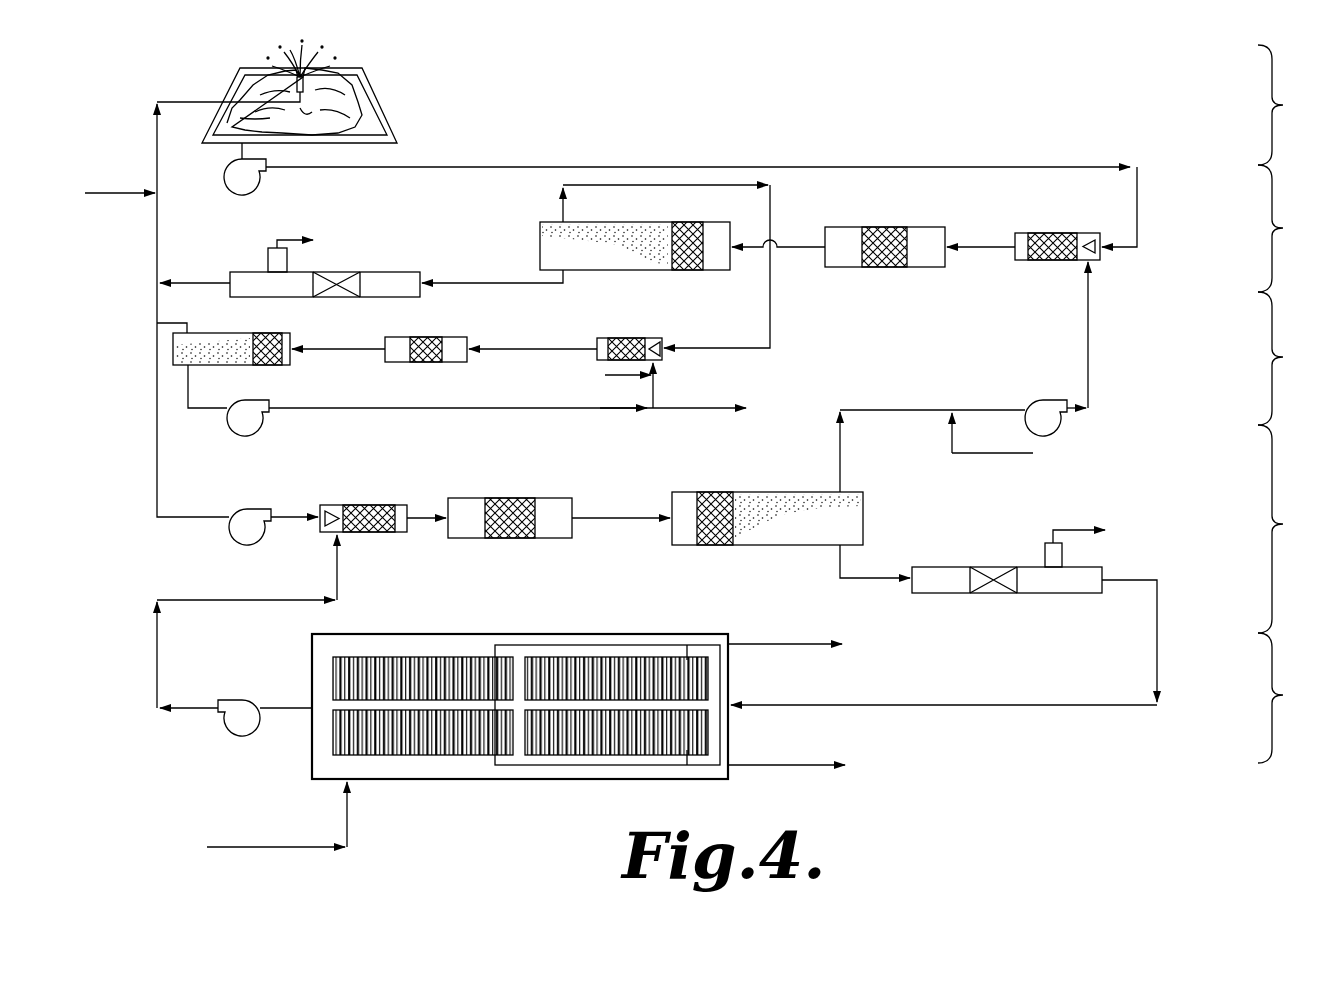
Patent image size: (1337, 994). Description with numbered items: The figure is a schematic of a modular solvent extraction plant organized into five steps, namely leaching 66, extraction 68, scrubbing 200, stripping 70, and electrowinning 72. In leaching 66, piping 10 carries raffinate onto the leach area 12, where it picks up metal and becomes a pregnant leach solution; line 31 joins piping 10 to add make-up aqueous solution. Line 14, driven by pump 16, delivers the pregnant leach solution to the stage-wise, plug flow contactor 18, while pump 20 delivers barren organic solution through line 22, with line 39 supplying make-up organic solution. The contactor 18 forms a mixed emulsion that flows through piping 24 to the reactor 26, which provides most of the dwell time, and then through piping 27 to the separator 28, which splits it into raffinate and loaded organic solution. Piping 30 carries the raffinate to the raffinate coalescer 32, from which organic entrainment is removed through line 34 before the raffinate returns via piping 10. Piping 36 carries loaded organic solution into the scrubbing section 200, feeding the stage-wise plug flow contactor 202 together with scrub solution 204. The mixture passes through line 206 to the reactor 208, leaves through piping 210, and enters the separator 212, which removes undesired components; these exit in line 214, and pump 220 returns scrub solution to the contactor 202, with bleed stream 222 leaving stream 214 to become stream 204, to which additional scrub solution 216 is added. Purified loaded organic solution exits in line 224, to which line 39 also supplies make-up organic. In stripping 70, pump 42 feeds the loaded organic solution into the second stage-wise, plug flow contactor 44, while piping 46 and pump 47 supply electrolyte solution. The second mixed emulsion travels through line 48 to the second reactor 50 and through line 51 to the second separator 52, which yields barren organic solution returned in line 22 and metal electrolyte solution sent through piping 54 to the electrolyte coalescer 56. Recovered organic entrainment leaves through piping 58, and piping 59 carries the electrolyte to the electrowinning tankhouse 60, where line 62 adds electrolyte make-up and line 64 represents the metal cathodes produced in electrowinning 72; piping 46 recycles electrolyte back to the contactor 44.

The piping 10 is at (187, 102).
The leach area 12 is at (358, 104).
The line 14 is at (450, 167).
The pump 16 is at (249, 192).
The stage-wise, plug flow contactor 18 is at (1050, 233).
The pump 20 is at (1043, 400).
The line 22 is at (1089, 328).
The piping 24 is at (977, 248).
The reactor 26 is at (880, 227).
The piping 27 is at (797, 247).
The separator 28 is at (608, 270).
The piping 30 is at (493, 283).
The line 31 is at (128, 192).
The raffinate coalescer 32 is at (300, 297).
The line 34 is at (300, 240).
The piping 36 is at (630, 185).
The line 39 is at (1020, 455).
The pump 42 is at (250, 509).
The second stage-wise, plug flow contactor 44 is at (372, 505).
The piping 46 is at (282, 707).
The pump 47 is at (246, 734).
The line 48 is at (423, 519).
The second reactor 50 is at (515, 538).
The line 51 is at (600, 518).
The second separator 52 is at (762, 492).
The piping 54 is at (878, 579).
The electrolyte coalescer 56 is at (957, 593).
The piping 58 is at (1085, 530).
The piping 59 is at (890, 705).
The electrowinning tankhouse 60 is at (455, 634).
The line 62 is at (240, 847).
The line 64 is at (766, 644).
The leaching 66 is at (1291, 105).
The extraction 68 is at (1291, 228).
The stripping 70 is at (1288, 529).
The electrowinning 72 is at (1288, 698).
The scrubbing section 200 is at (1297, 358).
The stage-wise plug flow contactor 202 is at (622, 338).
The scrub solution 204 is at (655, 387).
The line 206 is at (540, 350).
The reactor 208 is at (425, 362).
The piping 210 is at (333, 350).
The separator 212 is at (250, 365).
The line 214 is at (189, 385).
The additional scrub solution 216 is at (630, 377).
The pump 220 is at (265, 427).
The bleed stream 222 is at (692, 410).
The line 224 is at (157, 337).